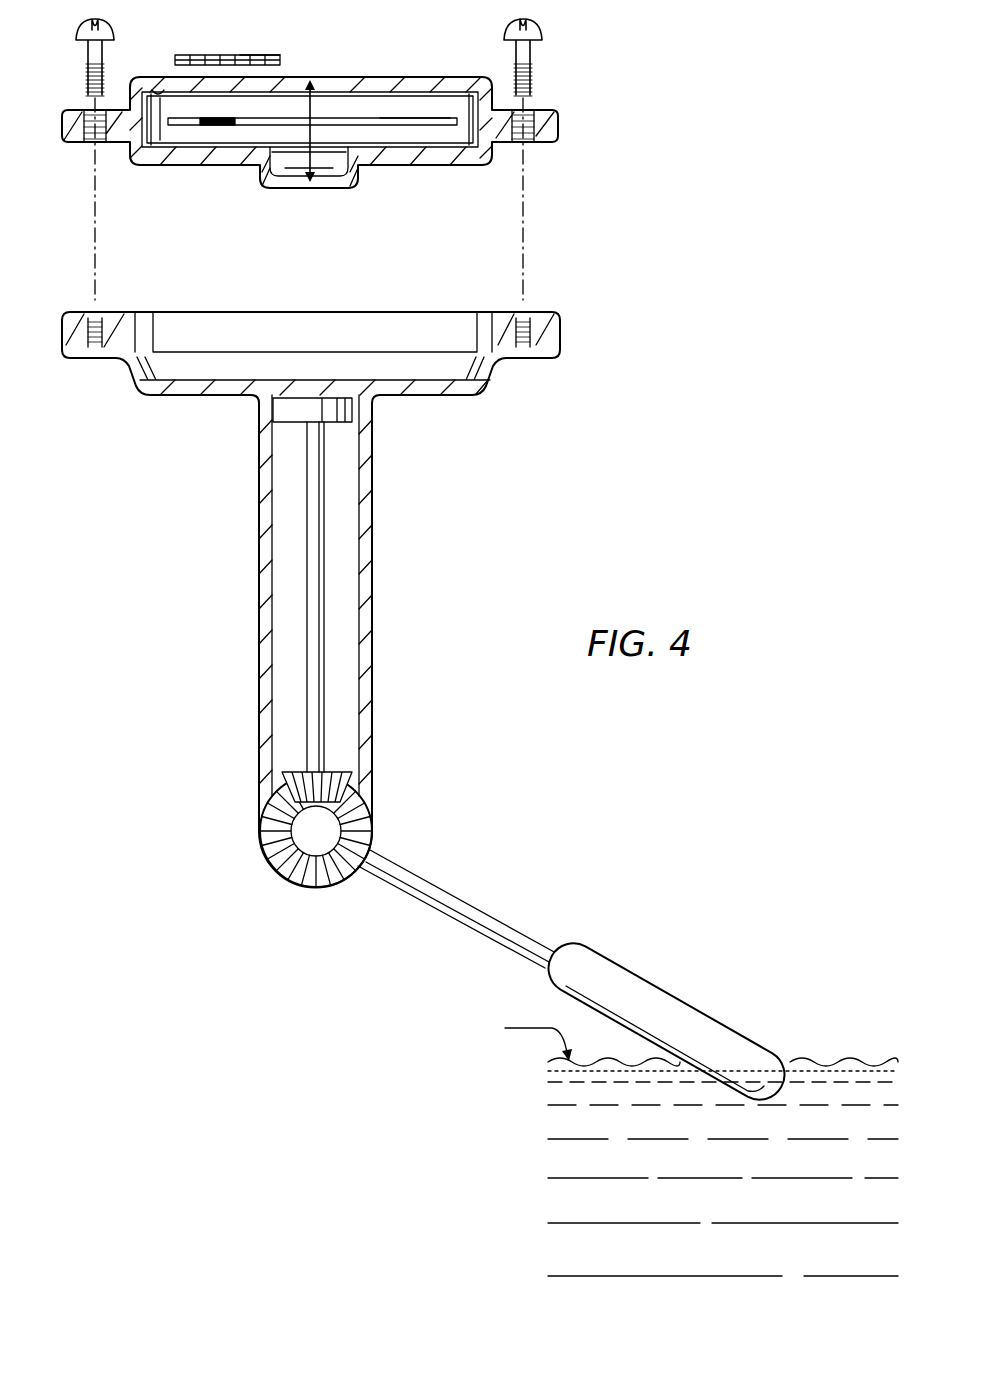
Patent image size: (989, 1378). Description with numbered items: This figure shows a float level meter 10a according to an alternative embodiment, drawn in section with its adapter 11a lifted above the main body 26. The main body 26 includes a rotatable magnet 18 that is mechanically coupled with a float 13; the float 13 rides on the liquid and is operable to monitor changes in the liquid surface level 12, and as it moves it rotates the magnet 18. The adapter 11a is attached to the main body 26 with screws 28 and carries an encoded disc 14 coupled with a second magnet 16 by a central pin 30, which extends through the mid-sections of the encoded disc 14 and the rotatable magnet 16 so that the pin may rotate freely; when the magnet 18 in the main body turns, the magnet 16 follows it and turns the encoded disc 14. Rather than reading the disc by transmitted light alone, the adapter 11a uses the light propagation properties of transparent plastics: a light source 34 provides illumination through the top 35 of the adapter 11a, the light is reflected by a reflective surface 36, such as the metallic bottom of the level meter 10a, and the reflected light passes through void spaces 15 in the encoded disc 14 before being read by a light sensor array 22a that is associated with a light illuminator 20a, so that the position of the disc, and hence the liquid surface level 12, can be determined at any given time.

The level meter 10a is at (718, 238).
The adapter 11a is at (384, 222).
The liquid surface level 12 is at (457, 1073).
The float 13 is at (680, 1008).
The encoded disc 14 is at (416, 124).
The void spaces 15 is at (228, 127).
The magnet 16 is at (318, 176).
The magnet 18 is at (280, 412).
The light illuminator 20a is at (214, 54).
The light sensor array 22a is at (253, 54).
The main body 26 is at (238, 617).
The screws 28 is at (86, 56).
The central pin 30 is at (344, 108).
The light source 34 is at (165, 96).
The top 35 is at (404, 77).
The reflective surface 36 is at (192, 141).